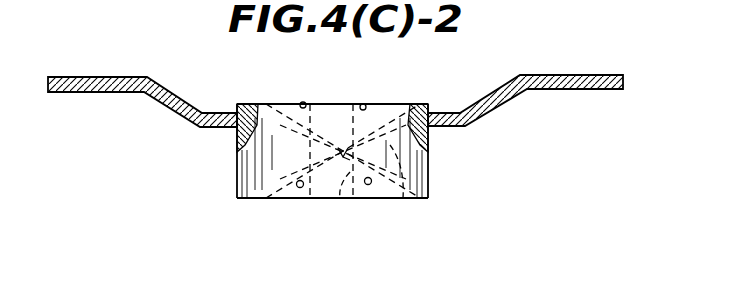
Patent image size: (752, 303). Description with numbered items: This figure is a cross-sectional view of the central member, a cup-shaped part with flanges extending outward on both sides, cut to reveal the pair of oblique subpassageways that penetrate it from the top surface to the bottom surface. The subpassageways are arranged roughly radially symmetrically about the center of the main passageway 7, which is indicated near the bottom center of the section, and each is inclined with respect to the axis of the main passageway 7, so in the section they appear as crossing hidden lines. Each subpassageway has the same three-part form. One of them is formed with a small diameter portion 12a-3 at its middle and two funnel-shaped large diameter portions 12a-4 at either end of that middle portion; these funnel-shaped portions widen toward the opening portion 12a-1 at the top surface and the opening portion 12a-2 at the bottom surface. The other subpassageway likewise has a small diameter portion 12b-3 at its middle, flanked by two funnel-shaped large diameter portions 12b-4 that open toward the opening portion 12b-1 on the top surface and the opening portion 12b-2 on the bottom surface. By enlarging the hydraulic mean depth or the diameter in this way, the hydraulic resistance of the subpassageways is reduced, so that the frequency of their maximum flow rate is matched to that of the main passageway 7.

The opening portion 12a-1 is at (390, 104).
The opening portion 12a-2 is at (279, 198).
The small diameter portion 12a-3 is at (343, 157).
The funnel-shaped large diameter portion 12a-4 is at (358, 103).
The opening portion 12b-1 is at (280, 104).
The opening portion 12b-2 is at (397, 199).
The small diameter portion 12b-3 is at (343, 157).
The funnel-shaped large diameter portion 12b-4 is at (302, 103).
The main passageway 7 is at (344, 198).